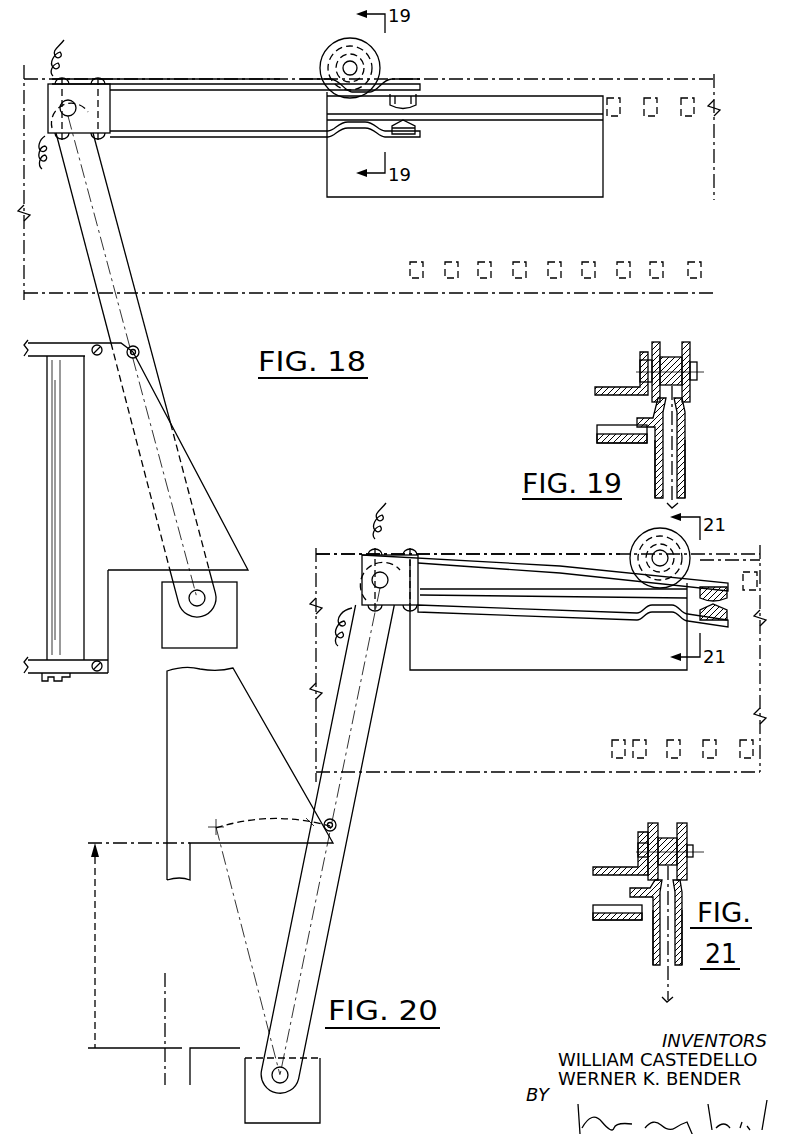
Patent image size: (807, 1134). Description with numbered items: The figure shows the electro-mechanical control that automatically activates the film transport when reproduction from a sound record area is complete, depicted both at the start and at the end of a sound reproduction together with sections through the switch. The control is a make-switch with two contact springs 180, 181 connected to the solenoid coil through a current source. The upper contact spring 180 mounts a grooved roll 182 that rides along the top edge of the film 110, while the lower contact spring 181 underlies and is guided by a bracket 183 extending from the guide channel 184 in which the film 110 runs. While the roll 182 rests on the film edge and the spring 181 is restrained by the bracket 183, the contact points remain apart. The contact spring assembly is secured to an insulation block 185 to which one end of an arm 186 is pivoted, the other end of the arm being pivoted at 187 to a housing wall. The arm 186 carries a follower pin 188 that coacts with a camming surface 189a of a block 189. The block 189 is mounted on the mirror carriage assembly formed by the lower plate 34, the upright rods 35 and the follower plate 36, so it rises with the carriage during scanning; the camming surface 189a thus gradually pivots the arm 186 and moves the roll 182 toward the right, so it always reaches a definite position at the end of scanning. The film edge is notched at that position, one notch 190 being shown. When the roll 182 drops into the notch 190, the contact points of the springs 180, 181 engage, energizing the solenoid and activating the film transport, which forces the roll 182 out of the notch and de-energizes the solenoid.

In FIG. 18, the film 110 is at (688, 188).
In FIG. 19, the film 110 is at (674, 452).
In FIG. 20, the film 110 is at (447, 773).
In FIG. 21, the film 110 is at (667, 982).
In FIG. 18, the contact spring 180 is at (200, 86).
In FIG. 19, the contact spring 180 is at (610, 387).
In FIG. 20, the contact spring 180 is at (472, 562).
In FIG. 21, the contact spring 180 is at (602, 868).
In FIG. 18, the contact spring 181 is at (182, 134).
In FIG. 19, the contact spring 181 is at (597, 428).
In FIG. 20, the contact spring 181 is at (576, 619).
In FIG. 21, the contact spring 181 is at (607, 920).
In FIG. 18, the grooved roll 182 is at (378, 64).
In FIG. 19, the grooved roll 182 is at (690, 354).
In FIG. 20, the grooved roll 182 is at (640, 540).
In FIG. 21, the grooved roll 182 is at (683, 836).
In FIG. 18, the bracket 183 is at (474, 119).
In FIG. 19, the bracket 183 is at (642, 420).
In FIG. 20, the bracket 183 is at (492, 598).
In FIG. 21, the bracket 183 is at (630, 893).
In FIG. 18, the guide channel 184 is at (594, 165).
In FIG. 19, the guide channel 184 is at (687, 487).
In FIG. 20, the guide channel 184 is at (608, 665).
In FIG. 21, the guide channel 184 is at (650, 945).
In FIG. 18, the pivot block 185 is at (107, 118).
In FIG. 20, the pivot block 185 is at (411, 561).
In FIG. 18, the arm 186 is at (137, 328).
In FIG. 20, the arm 186 is at (327, 919).
In FIG. 18, the pivot 187 is at (205, 600).
In FIG. 20, the pivot 187 is at (288, 1078).
In FIG. 18, the follower pin 188 is at (139, 357).
In FIG. 20, the follower pin 188 is at (336, 830).
In FIG. 18, the block 189 is at (93, 438).
In FIG. 20, the block 189 is at (175, 741).
In FIG. 18, the camming surface 189a is at (214, 498).
In FIG. 20, the camming surface 189a is at (259, 716).
In FIG. 18, the notch 190 is at (577, 88).
In FIG. 20, the notch 190 is at (698, 566).
In FIG. 18, the lower plate 34 is at (38, 345).
In FIG. 18, the upright rods 35 is at (52, 518).
In FIG. 18, the follower plate 36 is at (30, 672).